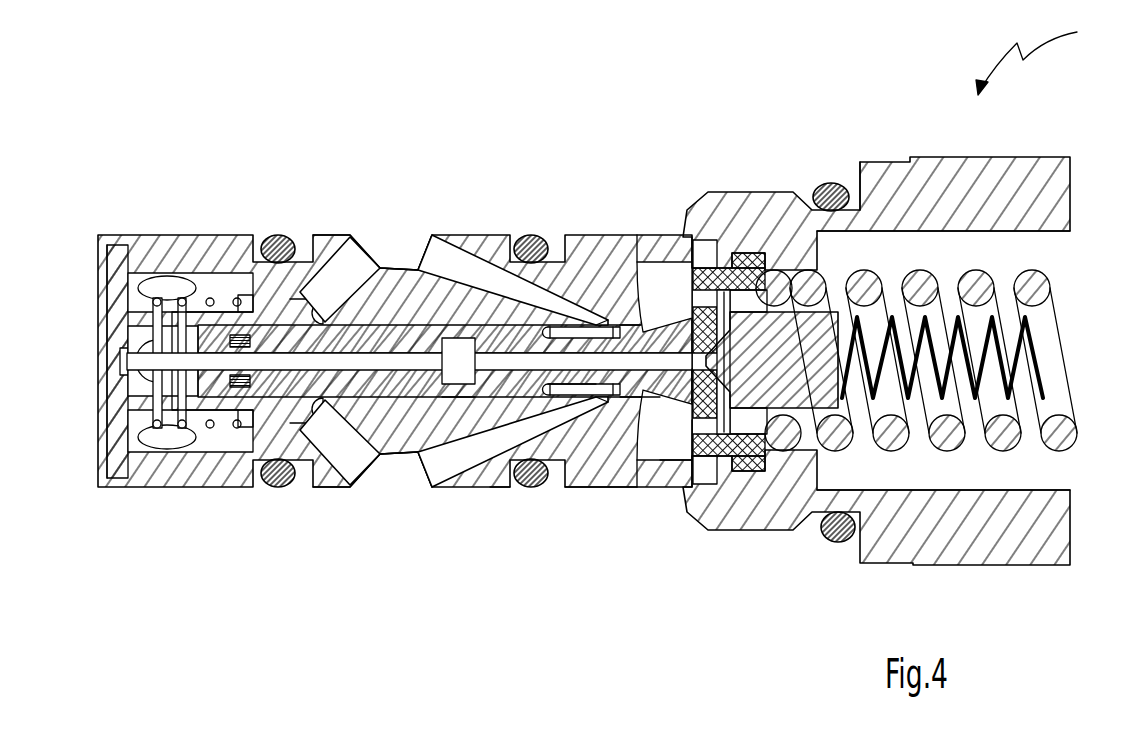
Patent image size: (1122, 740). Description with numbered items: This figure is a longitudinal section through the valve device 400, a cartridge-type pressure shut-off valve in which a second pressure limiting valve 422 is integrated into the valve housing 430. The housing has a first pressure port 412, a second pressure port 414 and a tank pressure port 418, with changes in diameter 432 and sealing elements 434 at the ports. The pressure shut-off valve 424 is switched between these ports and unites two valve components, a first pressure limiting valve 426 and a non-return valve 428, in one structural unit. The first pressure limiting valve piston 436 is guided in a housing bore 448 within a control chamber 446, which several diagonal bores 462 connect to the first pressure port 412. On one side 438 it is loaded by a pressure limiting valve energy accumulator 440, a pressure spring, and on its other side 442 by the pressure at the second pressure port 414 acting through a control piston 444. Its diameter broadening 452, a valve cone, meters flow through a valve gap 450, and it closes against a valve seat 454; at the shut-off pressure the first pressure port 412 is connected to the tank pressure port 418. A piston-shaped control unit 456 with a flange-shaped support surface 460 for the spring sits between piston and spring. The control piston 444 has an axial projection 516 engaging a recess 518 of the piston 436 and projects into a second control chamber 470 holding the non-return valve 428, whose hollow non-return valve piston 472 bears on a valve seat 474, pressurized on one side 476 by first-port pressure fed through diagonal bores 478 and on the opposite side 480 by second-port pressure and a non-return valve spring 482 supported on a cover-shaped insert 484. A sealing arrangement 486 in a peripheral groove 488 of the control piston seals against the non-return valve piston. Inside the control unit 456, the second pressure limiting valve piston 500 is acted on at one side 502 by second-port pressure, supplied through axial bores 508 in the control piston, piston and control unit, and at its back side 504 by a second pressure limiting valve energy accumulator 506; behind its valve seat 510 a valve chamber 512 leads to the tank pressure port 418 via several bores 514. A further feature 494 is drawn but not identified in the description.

The valve device 400 is at (1041, 59).
The first pressure port 412 is at (378, 247).
The second pressure port 414 is at (182, 270).
The tank pressure port 418 is at (658, 252).
The second pressure limiting valve 422 is at (755, 258).
The pressure shut-off valve 424 is at (577, 384).
The first pressure limiting valve 426 is at (683, 450).
The non-return valve 428 is at (210, 402).
The valve housing 430 is at (582, 447).
The changes in diameter 432 is at (693, 210).
The sealing elements 434 is at (274, 236).
The first pressure limiting valve piston 436 is at (500, 430).
The side of the first pressure limiting valve piston 438 is at (665, 420).
The pressure limiting valve energy accumulator 440 is at (1003, 433).
The other side of the first pressure limiting valve piston 442 is at (393, 387).
The control piston 444 is at (388, 400).
The control chamber 446 is at (605, 325).
The housing bore 448 is at (388, 325).
The valve gap 450 is at (648, 378).
The diameter broadening 452 is at (655, 332).
The valve seat 454 is at (625, 330).
The piston-shaped control unit 456 is at (748, 466).
The flange-shaped support surface 460 is at (780, 275).
The diagonal bores 462 is at (467, 263).
The second control chamber 470 is at (270, 413).
The non-return valve piston 472 is at (238, 330).
The valve seat 474 is at (253, 300).
The side of the non-return valve piston 476 is at (303, 300).
The diagonal bores 478 is at (350, 268).
The opposite side of the non-return valve piston 480 is at (177, 287).
The non-return valve spring 482 is at (162, 402).
The cover-shaped insert 484 is at (113, 368).
The sealing arrangement 486 is at (200, 380).
The peripheral groove 488 is at (200, 343).
The spring chamber 494 is at (935, 465).
The second pressure limiting valve piston 500 is at (802, 392).
The side of the second pressure limiting valve piston 502 is at (678, 378).
The back side of the second pressure limiting valve piston 504 is at (845, 232).
The second pressure limiting valve energy accumulator 506 is at (1032, 352).
The axial bores 508 is at (322, 432).
The valve seat 510 is at (722, 292).
The valve chamber 512 is at (720, 420).
The bores 514 is at (700, 272).
The axial projection 516 is at (458, 380).
The recess 518 is at (465, 420).